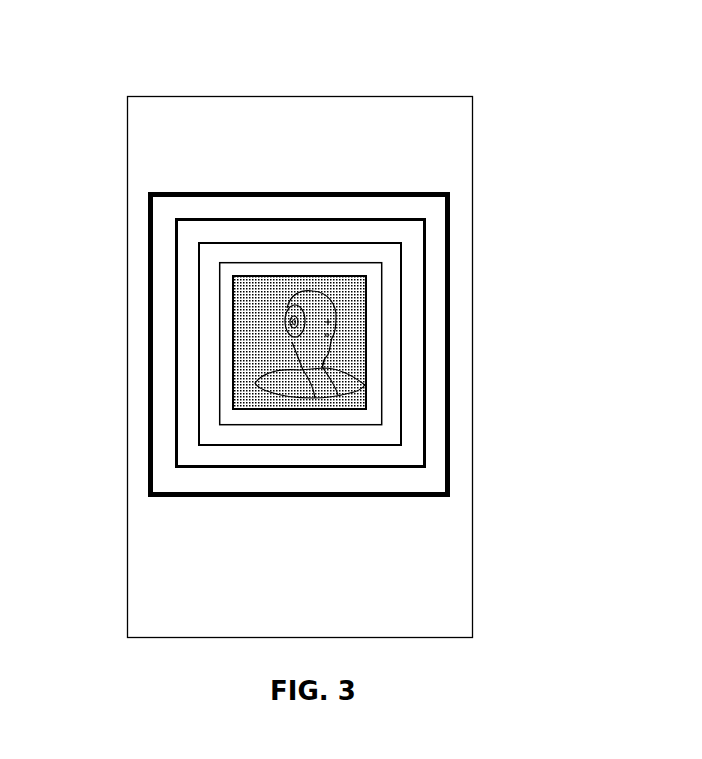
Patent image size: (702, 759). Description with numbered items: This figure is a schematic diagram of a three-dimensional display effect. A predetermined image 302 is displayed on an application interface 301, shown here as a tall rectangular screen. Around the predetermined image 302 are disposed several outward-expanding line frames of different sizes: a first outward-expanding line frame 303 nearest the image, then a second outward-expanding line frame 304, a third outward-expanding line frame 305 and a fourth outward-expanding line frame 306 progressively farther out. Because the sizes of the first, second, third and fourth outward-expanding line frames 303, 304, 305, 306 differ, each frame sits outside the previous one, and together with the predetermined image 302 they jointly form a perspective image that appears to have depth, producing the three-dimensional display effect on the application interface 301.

The application interface 301 is at (303, 95).
The predetermined image 302 is at (251, 344).
The first outward-expanding line frame 303 is at (382, 263).
The second outward-expanding line frame 304 is at (403, 317).
The third outward-expanding line frame 305 is at (427, 345).
The fourth outward-expanding line frame 306 is at (452, 401).